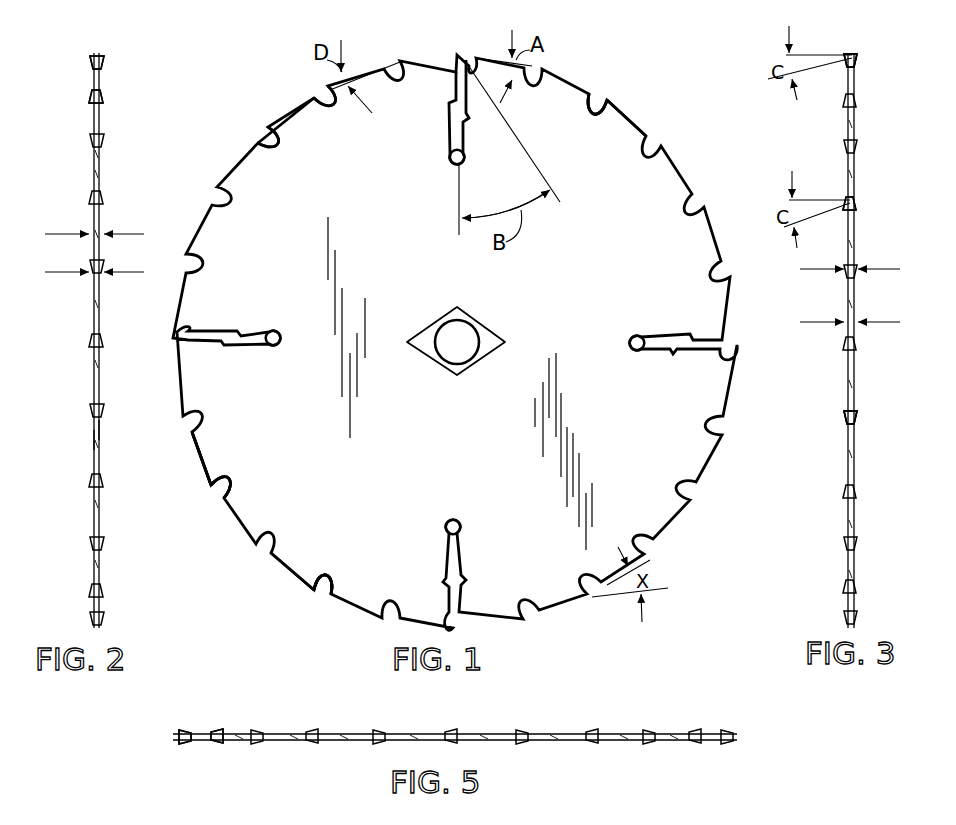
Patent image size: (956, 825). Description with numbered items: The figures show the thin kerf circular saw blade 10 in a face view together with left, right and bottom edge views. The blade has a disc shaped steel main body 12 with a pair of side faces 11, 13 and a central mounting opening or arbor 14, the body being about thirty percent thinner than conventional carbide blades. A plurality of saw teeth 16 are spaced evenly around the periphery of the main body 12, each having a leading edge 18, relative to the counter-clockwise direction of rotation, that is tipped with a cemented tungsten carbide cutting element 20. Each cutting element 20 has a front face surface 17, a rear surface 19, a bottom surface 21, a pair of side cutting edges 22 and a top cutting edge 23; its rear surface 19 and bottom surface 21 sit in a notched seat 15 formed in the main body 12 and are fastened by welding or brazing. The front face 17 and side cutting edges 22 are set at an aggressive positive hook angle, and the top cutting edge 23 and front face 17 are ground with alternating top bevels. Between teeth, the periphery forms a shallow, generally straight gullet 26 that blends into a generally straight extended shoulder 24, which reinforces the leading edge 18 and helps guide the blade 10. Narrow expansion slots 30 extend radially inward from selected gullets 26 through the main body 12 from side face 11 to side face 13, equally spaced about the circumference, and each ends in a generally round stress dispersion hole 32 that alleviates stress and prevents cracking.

In FIG. 1, the thin kerf circular saw blade 10 is at (243, 77).
In FIG. 1, the side face 11 is at (533, 521).
In FIG. 2, the side face 11 is at (100, 430).
In FIG. 1, the main body 12 is at (287, 173).
In FIG. 2, the main body 12 is at (93, 385).
In FIG. 3, the main body 12 is at (858, 517).
In FIG. 5, the main body 12 is at (283, 733).
In FIG. 2, the side face 13 is at (93, 440).
In FIG. 1, the central mounting opening or arbor 14 is at (467, 322).
In FIG. 1, the seat 15 is at (220, 467).
In FIG. 1, the saw tooth 16 is at (614, 102).
In FIG. 1, the front face surface 17 is at (223, 488).
In FIG. 2, the front face surface 17 is at (92, 78).
In FIG. 3, the front face surface 17 is at (855, 55).
In FIG. 5, the front face surface 17 is at (223, 742).
In FIG. 1, the leading edge 18 is at (603, 118).
In FIG. 1, the rear surface 19 is at (302, 580).
In FIG. 3, the rear surface 19 is at (855, 427).
In FIG. 5, the rear surface 19 is at (203, 740).
In FIG. 1, the cutting element 20 is at (322, 95).
In FIG. 3, the cutting element 20 is at (855, 203).
In FIG. 1, the bottom surface 21 is at (313, 570).
In FIG. 2, the side cutting edges 22 is at (110, 320).
In FIG. 3, the side cutting edges 22 is at (845, 420).
In FIG. 5, the side cutting edges 22 is at (215, 732).
In FIG. 1, the top cutting edge 23 is at (212, 478).
In FIG. 2, the top cutting edge 23 is at (93, 56).
In FIG. 3, the top cutting edge 23 is at (852, 55).
In FIG. 1, the extended shoulder 24 is at (278, 124).
In FIG. 1, the gullet 26 is at (308, 109).
In FIG. 1, the expansion slot 30 is at (447, 108).
In FIG. 1, the stress dispersion hole 32 is at (450, 158).